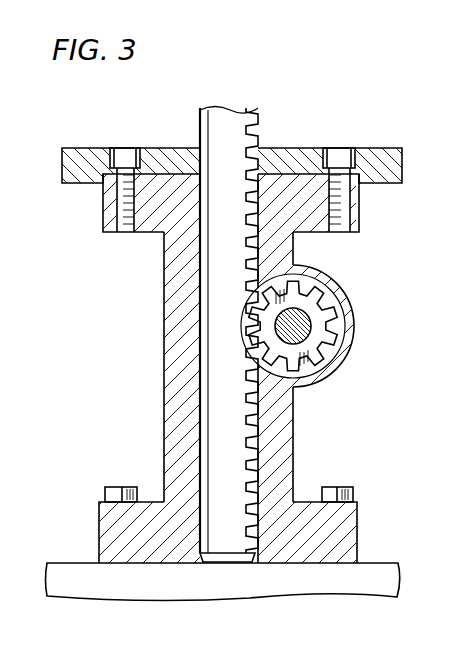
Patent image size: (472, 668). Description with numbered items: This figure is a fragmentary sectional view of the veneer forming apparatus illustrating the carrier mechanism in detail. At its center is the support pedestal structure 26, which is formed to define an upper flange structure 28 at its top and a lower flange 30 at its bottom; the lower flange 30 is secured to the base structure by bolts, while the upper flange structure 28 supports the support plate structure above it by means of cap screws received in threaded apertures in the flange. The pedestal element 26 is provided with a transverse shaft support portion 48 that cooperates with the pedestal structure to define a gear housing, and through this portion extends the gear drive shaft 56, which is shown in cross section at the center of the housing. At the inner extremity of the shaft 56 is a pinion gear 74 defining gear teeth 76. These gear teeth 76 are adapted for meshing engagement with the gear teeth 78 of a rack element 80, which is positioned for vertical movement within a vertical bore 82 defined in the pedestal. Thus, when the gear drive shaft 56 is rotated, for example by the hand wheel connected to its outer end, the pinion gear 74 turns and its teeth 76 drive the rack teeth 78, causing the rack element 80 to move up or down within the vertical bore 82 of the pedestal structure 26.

The support pedestal structure 26 is at (177, 302).
The upper flange structure 28 is at (108, 215).
The lower flange 30 is at (112, 532).
The transverse shaft support portion 48 is at (342, 286).
The gear drive shaft 56 is at (300, 325).
The pinion gear 74 is at (348, 360).
The gear teeth 76 is at (303, 374).
The gear teeth 78 is at (297, 250).
The rack element 80 is at (235, 125).
The vertical bore 82 is at (205, 366).